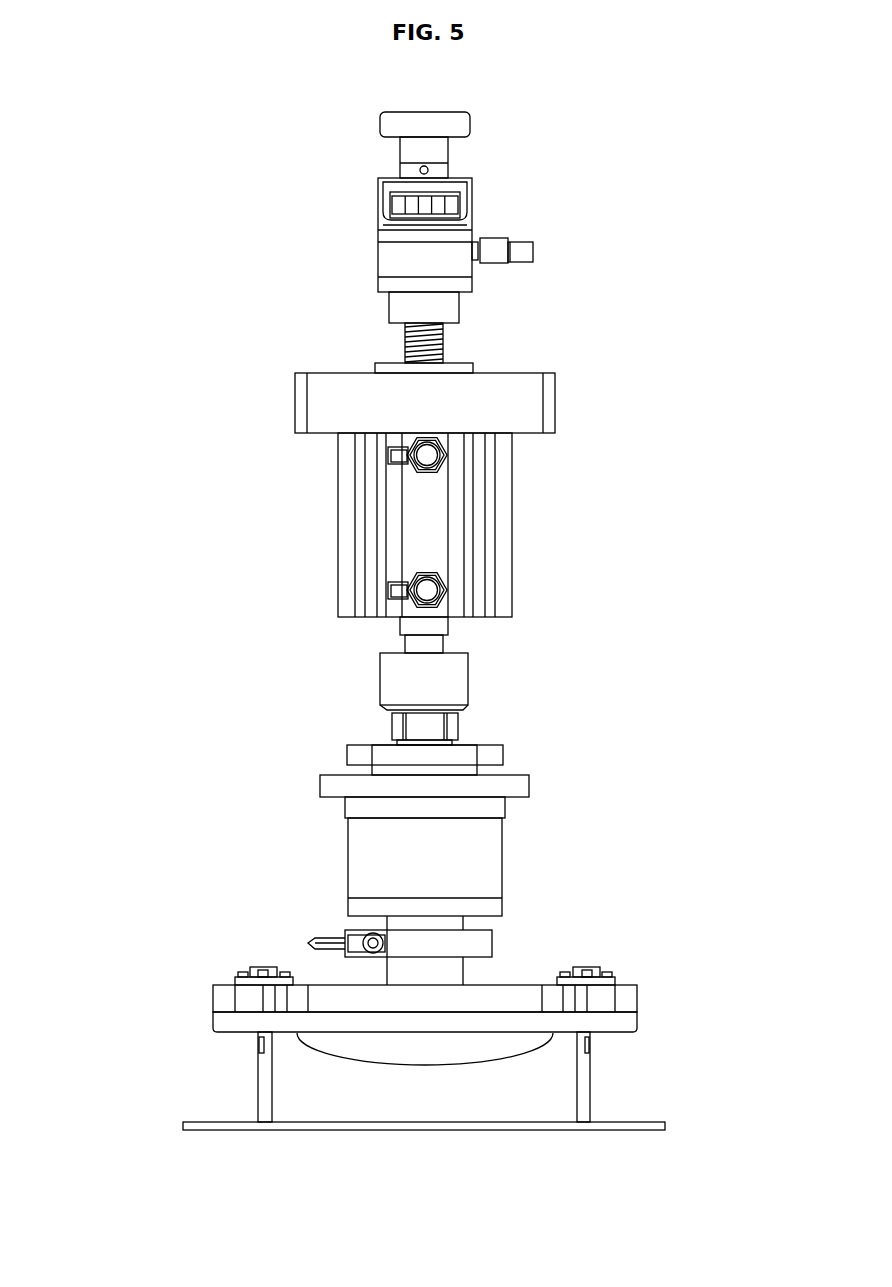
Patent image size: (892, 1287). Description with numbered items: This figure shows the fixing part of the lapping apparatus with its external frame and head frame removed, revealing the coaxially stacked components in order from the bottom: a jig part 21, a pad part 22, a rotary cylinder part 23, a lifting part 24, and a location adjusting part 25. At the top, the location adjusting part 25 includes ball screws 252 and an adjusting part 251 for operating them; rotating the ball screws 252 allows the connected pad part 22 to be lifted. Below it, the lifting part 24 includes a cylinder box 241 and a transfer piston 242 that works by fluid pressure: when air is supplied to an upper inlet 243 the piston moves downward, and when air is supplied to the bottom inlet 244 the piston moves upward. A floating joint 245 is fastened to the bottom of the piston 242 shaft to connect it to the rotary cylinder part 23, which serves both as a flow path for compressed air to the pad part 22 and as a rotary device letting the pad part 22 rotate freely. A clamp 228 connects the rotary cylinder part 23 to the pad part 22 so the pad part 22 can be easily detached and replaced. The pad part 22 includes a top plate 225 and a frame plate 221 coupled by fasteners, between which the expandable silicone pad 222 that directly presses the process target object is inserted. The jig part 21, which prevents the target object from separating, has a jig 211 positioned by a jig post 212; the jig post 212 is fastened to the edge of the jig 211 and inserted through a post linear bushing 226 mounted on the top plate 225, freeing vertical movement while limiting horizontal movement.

The jig part 21 is at (108, 1065).
The jig 211 is at (183, 1126).
The jig post 212 is at (258, 1068).
The pad part 22 is at (747, 835).
The frame plate 221 is at (637, 1020).
The pad 222 is at (543, 1048).
The top plate 225 is at (637, 1000).
The post linear bushing 226 is at (615, 983).
The clamp 228 is at (495, 942).
The rotary cylinder part 23 is at (348, 865).
The lifting part 24 is at (218, 462).
The cylinder box 241 is at (338, 516).
The transfer piston 242 is at (400, 626).
The upper inlet 243 is at (388, 455).
The bottom inlet 244 is at (388, 589).
The floating joint 245 is at (380, 676).
The location adjusting part 25 is at (270, 123).
The adjusting part 251 is at (380, 119).
The ball screws 252 is at (405, 334).